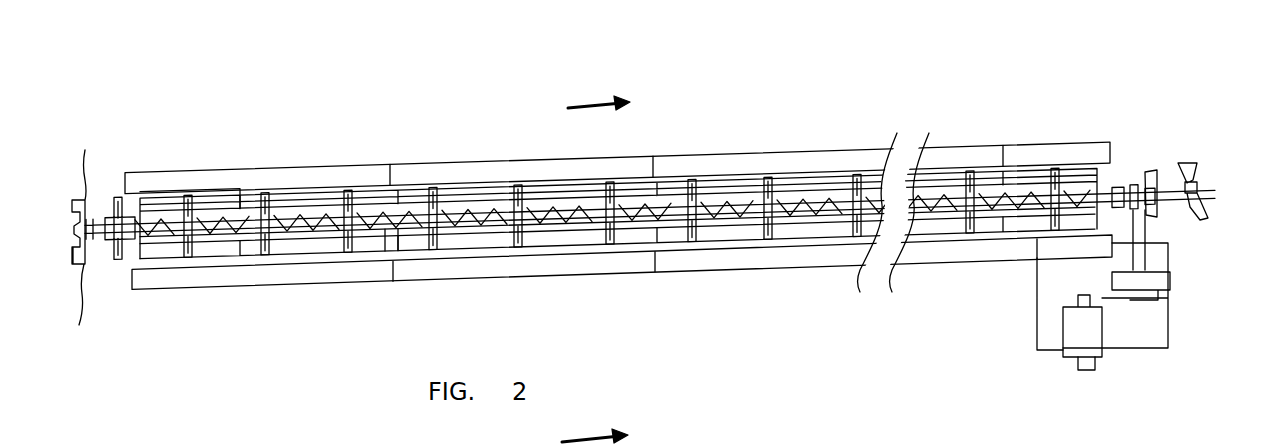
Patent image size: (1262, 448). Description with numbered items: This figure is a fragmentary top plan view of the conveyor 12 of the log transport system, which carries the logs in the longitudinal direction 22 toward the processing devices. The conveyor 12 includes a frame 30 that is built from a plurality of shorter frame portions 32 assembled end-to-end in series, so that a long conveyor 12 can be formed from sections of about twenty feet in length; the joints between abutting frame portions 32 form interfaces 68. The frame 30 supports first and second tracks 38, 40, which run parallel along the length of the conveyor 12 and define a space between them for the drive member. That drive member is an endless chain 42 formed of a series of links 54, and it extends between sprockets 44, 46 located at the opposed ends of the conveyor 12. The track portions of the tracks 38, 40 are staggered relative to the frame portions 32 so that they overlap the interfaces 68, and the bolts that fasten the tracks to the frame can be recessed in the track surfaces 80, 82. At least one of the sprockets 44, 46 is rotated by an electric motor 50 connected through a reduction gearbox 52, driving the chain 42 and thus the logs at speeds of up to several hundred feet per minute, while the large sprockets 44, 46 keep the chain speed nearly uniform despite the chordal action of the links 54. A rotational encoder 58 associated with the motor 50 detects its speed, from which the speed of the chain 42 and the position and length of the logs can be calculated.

The conveyor 12 is at (985, 140).
The longitudinal direction 22 is at (602, 105).
The frame 30 is at (287, 183).
The frame portions 32 is at (313, 283).
The first track 38 is at (212, 198).
The second track 40 is at (237, 252).
The chain 42 is at (485, 237).
The sprocket 44 is at (1167, 178).
The sprocket 46 is at (85, 162).
The electric motor 50 is at (1103, 360).
The reduction gearbox 52 is at (1158, 283).
The links 54 is at (712, 196).
The rotational encoder 58 is at (1083, 373).
The interfaces 68 is at (390, 180).
The track surface 80 is at (553, 186).
The second track surface 82 is at (633, 228).